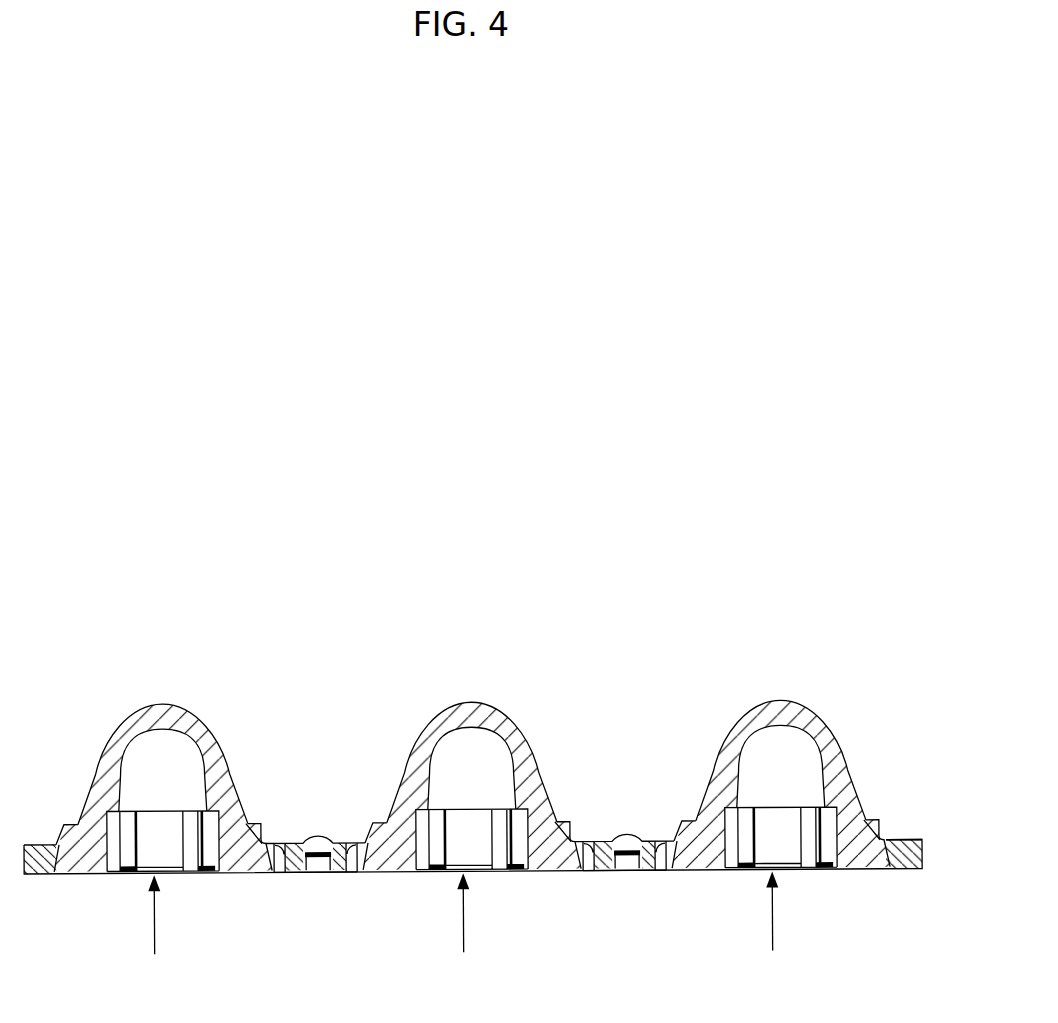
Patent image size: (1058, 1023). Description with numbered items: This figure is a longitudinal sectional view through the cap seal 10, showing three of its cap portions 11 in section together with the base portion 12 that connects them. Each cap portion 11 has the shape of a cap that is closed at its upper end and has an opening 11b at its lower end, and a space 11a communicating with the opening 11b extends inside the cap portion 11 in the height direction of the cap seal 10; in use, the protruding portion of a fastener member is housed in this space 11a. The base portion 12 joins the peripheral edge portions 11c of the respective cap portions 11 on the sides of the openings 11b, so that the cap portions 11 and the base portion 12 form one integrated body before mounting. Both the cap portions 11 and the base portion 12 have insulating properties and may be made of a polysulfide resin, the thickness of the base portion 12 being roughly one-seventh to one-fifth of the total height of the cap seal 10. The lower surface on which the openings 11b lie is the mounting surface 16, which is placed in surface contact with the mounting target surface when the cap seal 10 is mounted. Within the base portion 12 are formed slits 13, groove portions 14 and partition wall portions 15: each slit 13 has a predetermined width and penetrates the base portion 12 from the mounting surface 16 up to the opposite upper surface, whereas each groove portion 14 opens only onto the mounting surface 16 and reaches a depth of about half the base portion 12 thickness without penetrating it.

The cap seal 10 is at (700, 575).
The cap portion 11 is at (227, 762).
The space 11a is at (142, 788).
The opening 11b is at (472, 897).
The peripheral edge portion 11c is at (77, 838).
The base portion 12 is at (907, 838).
The slit 13 is at (276, 843).
The groove portion 14 is at (321, 837).
The partition wall portion 15 is at (294, 877).
The mounting surface 16 is at (861, 870).